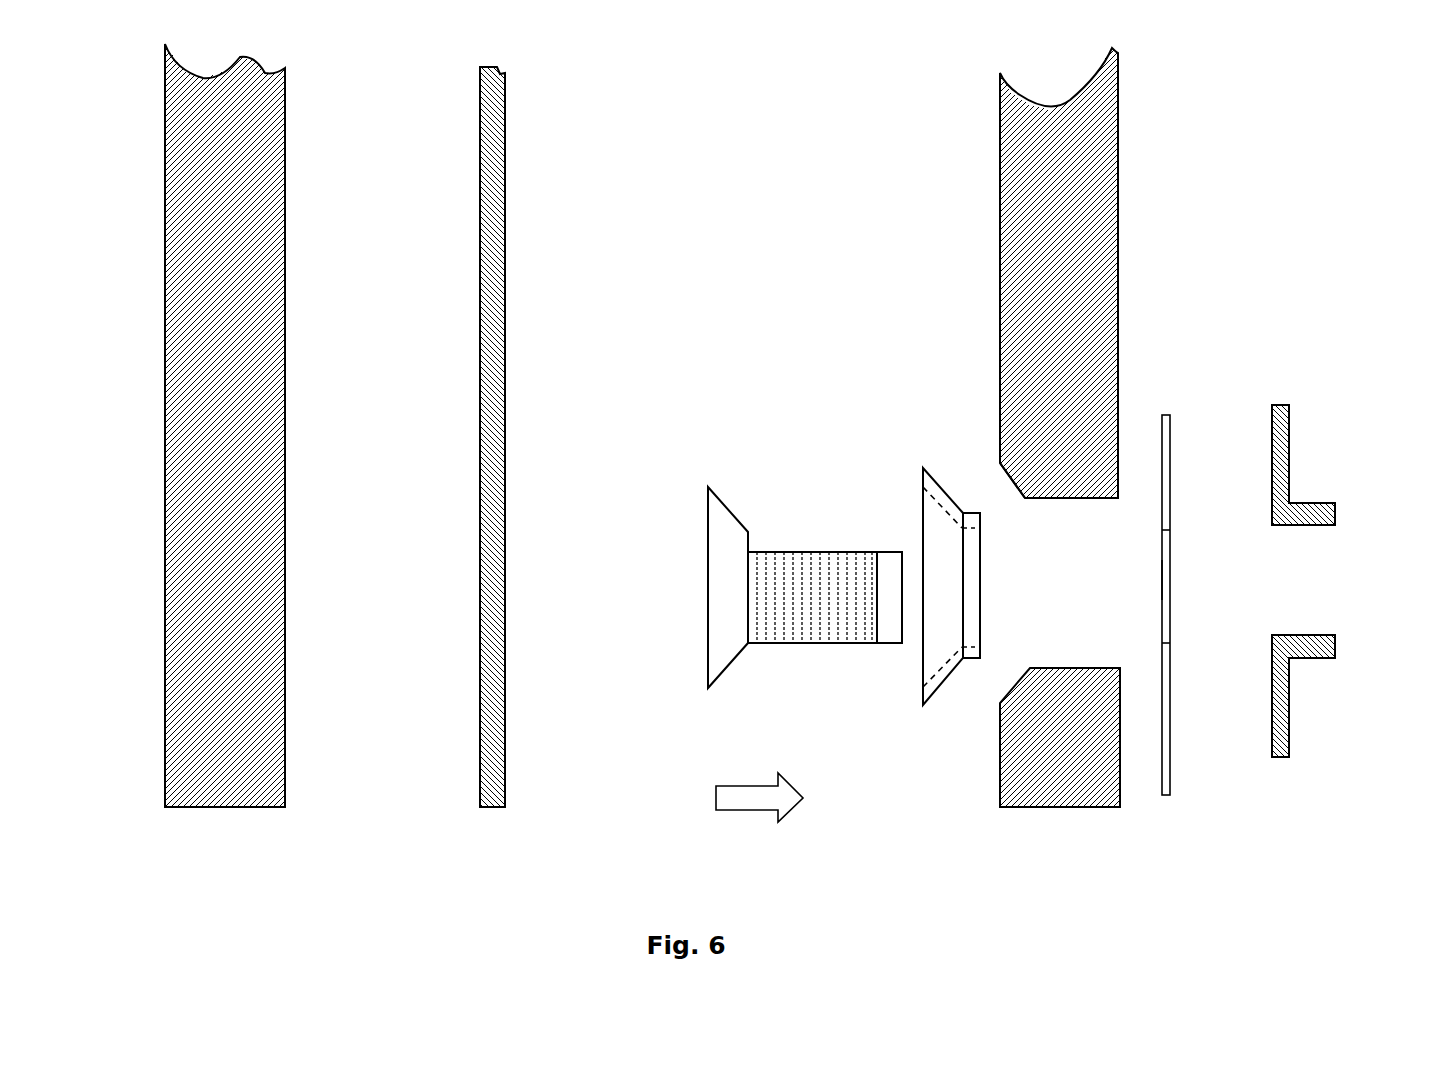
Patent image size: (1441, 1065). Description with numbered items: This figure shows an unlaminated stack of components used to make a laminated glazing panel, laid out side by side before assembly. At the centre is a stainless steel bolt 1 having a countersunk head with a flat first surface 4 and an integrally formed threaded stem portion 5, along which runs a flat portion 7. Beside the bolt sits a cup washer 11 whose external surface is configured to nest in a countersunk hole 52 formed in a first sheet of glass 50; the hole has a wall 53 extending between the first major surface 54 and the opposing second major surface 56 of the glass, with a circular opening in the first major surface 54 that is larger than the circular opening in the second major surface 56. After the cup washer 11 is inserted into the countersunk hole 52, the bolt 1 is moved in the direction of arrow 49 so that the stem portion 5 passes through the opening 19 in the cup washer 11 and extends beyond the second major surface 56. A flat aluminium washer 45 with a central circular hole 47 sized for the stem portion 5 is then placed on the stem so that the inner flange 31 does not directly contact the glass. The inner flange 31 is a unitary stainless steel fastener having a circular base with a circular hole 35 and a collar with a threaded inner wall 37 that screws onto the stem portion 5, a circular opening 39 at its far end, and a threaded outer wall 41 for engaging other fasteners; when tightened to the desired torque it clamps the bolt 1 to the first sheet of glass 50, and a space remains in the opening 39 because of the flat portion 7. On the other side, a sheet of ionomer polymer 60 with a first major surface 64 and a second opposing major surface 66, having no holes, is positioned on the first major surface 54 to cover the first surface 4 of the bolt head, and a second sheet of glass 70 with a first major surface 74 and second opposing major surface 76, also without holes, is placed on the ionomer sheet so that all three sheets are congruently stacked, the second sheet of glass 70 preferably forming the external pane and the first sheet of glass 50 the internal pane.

The bolt 1 is at (770, 572).
The flat first surface 4 is at (705, 582).
The stem portion 5 is at (890, 631).
The flat portion 7 is at (858, 552).
The cup washer 11 is at (910, 482).
The opening 19 is at (1002, 591).
The inner flange 31 is at (1325, 446).
The circular hole 35 is at (1272, 578).
The threaded inner wall 37 is at (1292, 527).
The circular opening 39 is at (1340, 588).
The outer wall 41 is at (1313, 660).
The washer 45 is at (1163, 437).
The circular hole 47 is at (1145, 580).
The arrow 49 is at (742, 797).
The first sheet of glass 50 is at (1100, 285).
The countersunk hole 52 is at (992, 497).
The wall 53 is at (1063, 668).
The first major surface 54 is at (997, 217).
The second major surface 56 is at (1121, 170).
The sheet of ionomer polymer 60 is at (490, 714).
The first major surface 64 is at (477, 209).
The second opposing major surface 66 is at (508, 512).
The second sheet of glass 70 is at (192, 258).
The first major surface 74 is at (162, 603).
The second opposing major surface 76 is at (288, 188).